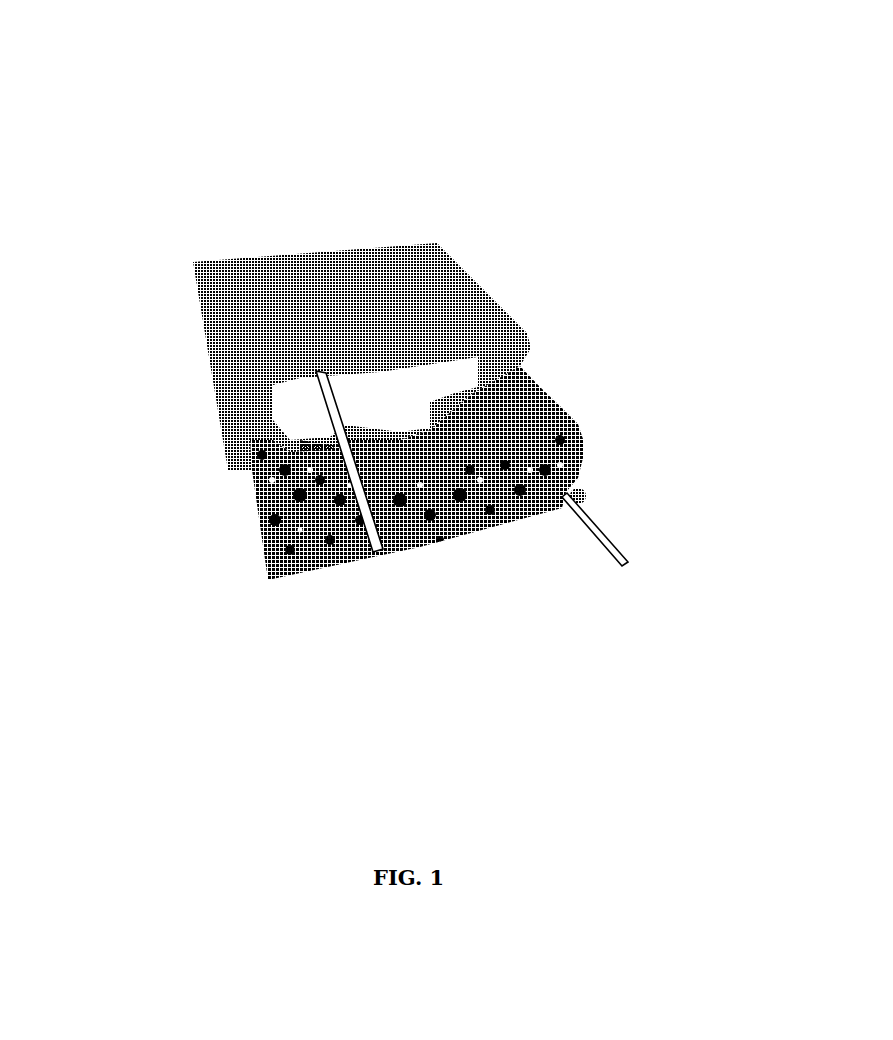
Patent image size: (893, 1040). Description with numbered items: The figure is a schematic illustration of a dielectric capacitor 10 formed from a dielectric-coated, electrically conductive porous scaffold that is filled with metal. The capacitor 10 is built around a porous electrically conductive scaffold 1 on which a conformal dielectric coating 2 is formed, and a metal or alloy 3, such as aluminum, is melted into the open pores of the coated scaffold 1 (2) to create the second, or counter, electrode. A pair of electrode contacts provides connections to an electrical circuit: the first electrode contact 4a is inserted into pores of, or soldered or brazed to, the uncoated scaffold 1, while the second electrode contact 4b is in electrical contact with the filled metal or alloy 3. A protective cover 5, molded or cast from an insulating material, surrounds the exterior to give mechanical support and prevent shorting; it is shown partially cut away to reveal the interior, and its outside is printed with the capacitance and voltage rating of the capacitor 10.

The dielectric capacitor 10 is at (403, 350).
The protective cover 5 is at (480, 318).
The metal or alloy 3 is at (487, 418).
The porous electrically conductive scaffold 1 is at (252, 527).
The conformal dielectric coating 2 is at (330, 476).
The first electrode contact 4a is at (623, 542).
The second electrode contact 4b is at (379, 549).